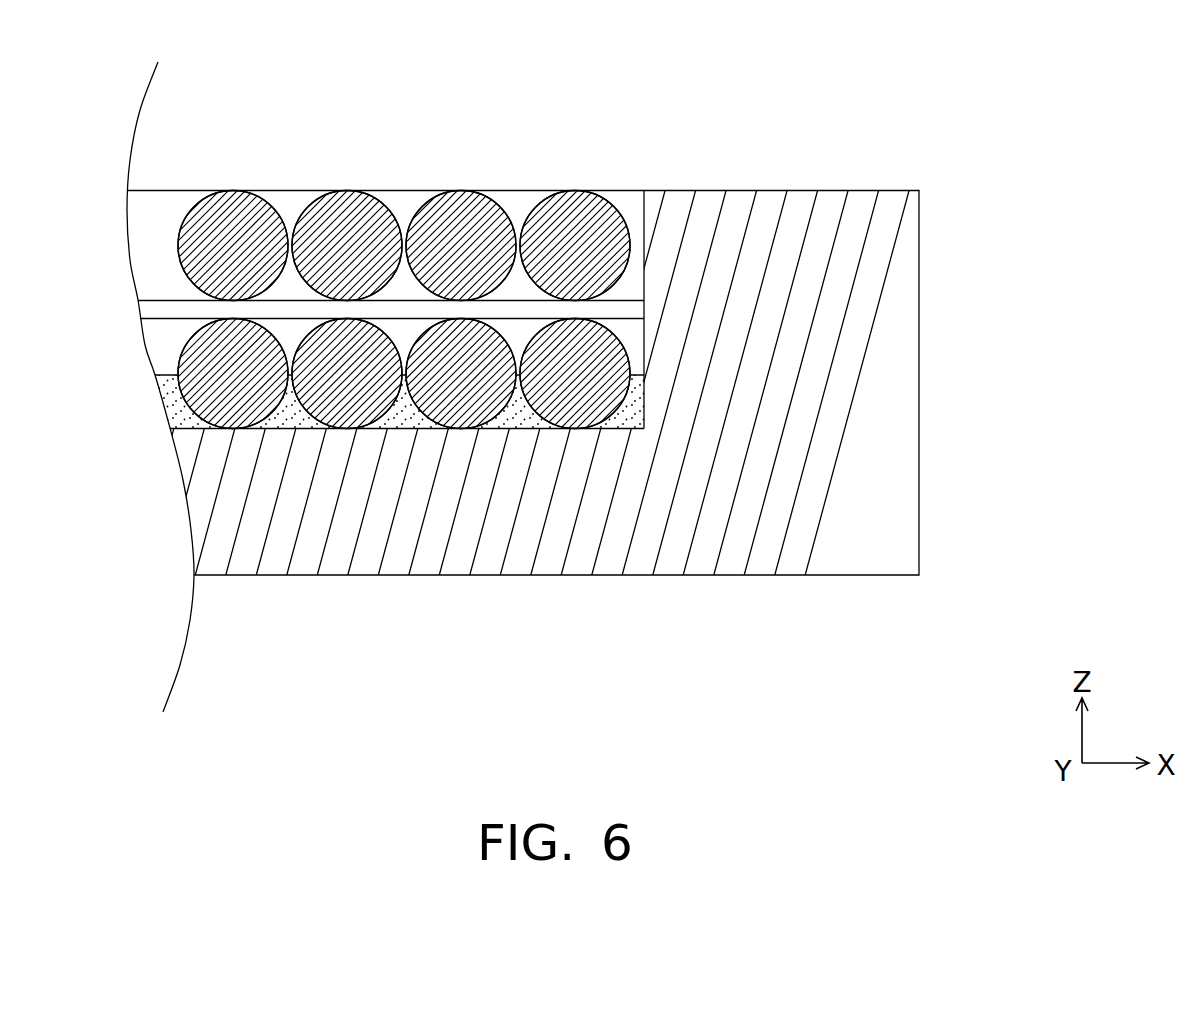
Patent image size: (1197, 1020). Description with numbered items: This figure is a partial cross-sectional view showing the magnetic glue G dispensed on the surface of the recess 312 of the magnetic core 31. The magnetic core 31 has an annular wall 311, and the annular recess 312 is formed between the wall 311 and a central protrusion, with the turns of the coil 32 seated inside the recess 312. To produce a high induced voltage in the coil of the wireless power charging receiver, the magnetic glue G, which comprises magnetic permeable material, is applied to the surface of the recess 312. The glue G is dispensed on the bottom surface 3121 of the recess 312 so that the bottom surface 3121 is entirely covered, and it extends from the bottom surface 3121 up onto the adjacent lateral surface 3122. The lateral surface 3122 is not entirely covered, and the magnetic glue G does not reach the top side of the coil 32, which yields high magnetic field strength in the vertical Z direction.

The magnetic core 31 is at (920, 337).
The annular wall 311 is at (888, 233).
The annular recess 312 is at (627, 207).
The bottom surface 3121 is at (612, 424).
The lateral surface 3122 is at (645, 310).
The coil 32 is at (448, 223).
The magnetic glue G is at (640, 406).